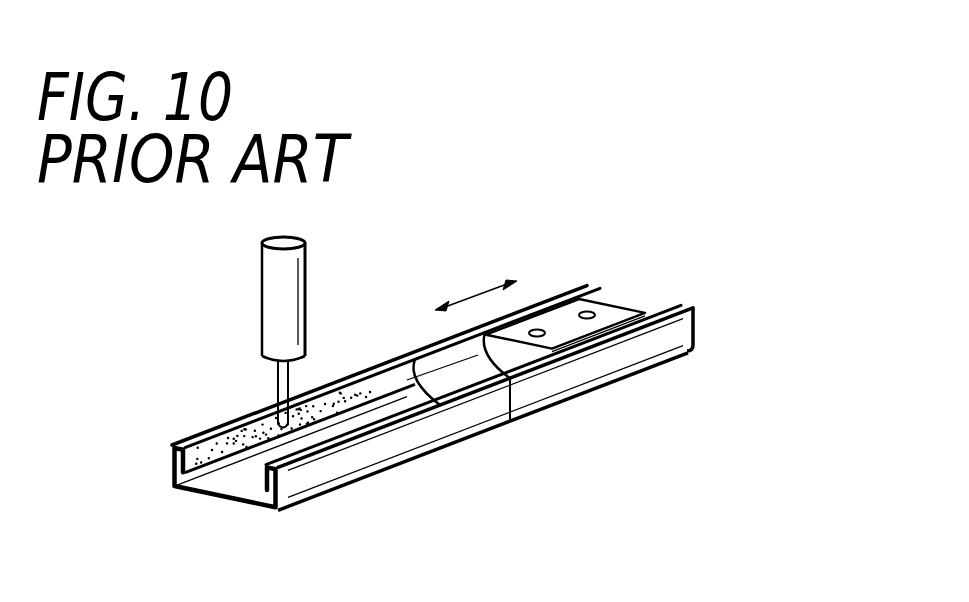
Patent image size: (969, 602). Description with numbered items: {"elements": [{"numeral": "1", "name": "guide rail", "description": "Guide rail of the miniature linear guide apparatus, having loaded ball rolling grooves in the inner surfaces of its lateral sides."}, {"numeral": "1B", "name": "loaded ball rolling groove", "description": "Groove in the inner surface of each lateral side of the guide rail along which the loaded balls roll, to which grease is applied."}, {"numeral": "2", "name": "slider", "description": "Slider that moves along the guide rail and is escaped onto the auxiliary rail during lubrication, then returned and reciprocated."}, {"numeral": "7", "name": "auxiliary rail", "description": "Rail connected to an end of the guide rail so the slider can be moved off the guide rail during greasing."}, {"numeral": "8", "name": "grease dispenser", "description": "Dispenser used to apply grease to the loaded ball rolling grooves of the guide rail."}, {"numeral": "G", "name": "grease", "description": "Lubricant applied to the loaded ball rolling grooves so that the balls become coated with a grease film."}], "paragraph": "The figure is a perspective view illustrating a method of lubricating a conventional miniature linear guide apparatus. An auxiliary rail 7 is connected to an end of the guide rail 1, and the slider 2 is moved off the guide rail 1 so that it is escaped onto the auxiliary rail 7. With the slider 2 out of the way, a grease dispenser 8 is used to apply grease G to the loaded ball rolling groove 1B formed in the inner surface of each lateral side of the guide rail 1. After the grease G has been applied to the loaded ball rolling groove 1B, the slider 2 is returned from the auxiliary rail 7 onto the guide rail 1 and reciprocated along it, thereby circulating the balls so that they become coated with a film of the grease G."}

The guide rail 1 is at (416, 440).
The rail lips / slot edges 1B is at (195, 463).
The slider plate 2 is at (607, 305).
The rail end 7 is at (684, 333).
The grease nozzle 8 is at (297, 293).
The grease G is at (250, 432).